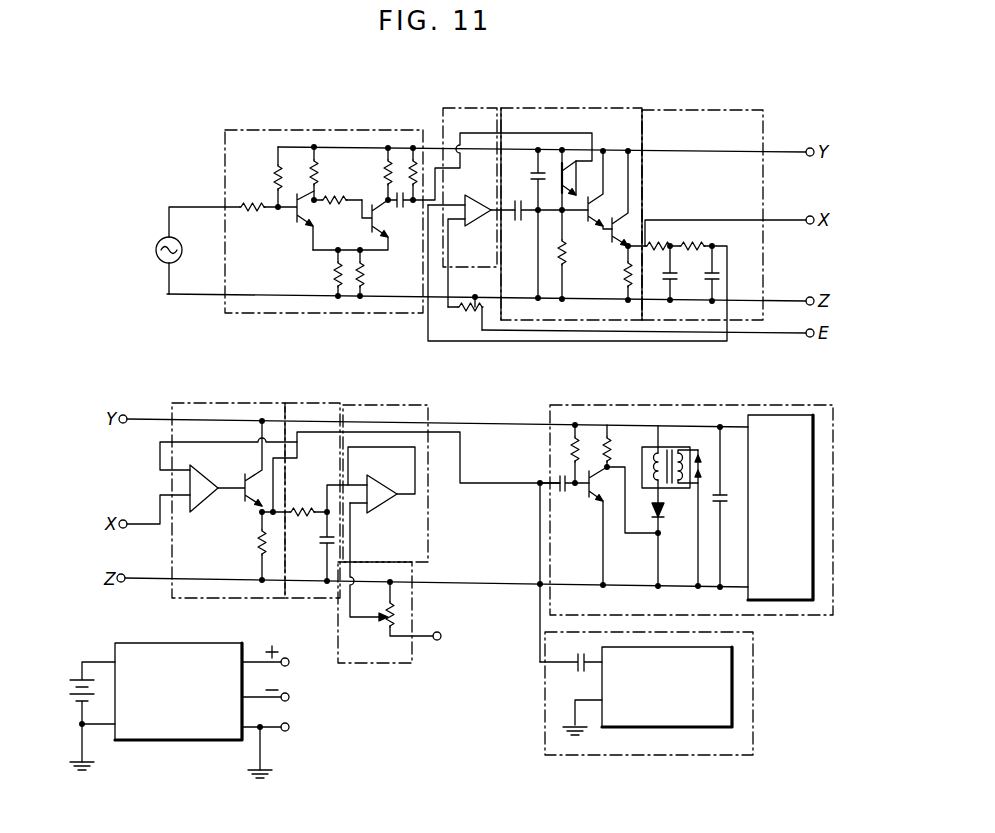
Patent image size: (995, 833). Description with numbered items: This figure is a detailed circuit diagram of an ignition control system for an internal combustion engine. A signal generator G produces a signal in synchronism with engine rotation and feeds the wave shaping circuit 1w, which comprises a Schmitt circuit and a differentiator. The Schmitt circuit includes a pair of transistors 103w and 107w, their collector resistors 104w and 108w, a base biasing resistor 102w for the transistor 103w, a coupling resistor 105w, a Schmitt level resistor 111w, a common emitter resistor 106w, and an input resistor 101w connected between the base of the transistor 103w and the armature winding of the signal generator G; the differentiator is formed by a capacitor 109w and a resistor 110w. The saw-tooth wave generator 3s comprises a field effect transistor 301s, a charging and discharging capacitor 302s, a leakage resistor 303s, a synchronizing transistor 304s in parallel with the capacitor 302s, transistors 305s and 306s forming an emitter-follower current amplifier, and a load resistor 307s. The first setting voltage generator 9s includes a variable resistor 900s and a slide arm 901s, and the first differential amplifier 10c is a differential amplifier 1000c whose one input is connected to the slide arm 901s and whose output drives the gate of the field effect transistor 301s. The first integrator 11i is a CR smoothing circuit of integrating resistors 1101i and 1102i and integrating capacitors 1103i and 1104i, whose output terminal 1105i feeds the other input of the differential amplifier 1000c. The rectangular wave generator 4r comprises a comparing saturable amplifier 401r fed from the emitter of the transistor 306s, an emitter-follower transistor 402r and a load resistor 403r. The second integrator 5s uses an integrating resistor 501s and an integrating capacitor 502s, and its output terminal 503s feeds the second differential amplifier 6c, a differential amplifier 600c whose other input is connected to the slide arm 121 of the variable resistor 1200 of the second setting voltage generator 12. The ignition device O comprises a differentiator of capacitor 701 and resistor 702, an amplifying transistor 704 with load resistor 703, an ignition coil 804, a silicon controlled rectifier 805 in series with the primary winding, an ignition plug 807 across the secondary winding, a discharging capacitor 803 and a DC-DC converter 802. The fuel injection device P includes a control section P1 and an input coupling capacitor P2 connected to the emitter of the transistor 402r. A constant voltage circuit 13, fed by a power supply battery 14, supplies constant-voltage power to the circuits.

The wave shaping circuit 1w is at (221, 133).
The input resistor 101w is at (249, 206).
The base biasing resistor 102w is at (277, 178).
The transistor 103w is at (297, 224).
The collector resistor 104w is at (309, 180).
The coupling resistor 105w is at (339, 199).
The common emitter resistor 106w is at (335, 276).
The transistor 107w is at (385, 233).
The collector resistor 108w is at (388, 183).
The capacitor 109w is at (400, 193).
The resistor 110w is at (413, 160).
The Schmitt level resistor 111w is at (362, 278).
The first differential amplifier 10c is at (457, 108).
The differential amplifier 1000c is at (483, 192).
The field effect transistor 301s is at (518, 226).
The charging and discharging capacitor 302s is at (536, 172).
The leakage resistor 303s is at (567, 250).
The synchronizing transistor 304s is at (562, 167).
The transistor 305s is at (605, 205).
The transistor 306s is at (620, 228).
The load resistor 307s is at (624, 282).
The saw-tooth wave generator 3s is at (628, 110).
The first integrator 11i is at (736, 112).
The integrating resistor 1101i is at (652, 244).
The integrating resistor 1102i is at (700, 243).
The integrating capacitor 1103i is at (672, 280).
The integrating capacitor 1104i is at (716, 277).
The output terminal 1105i is at (714, 245).
The first setting voltage generator 9s is at (427, 318).
The variable resistor 900s is at (483, 308).
The slide arm 901s is at (455, 310).
The rectangular wave generator 4r is at (207, 403).
The comparing saturable amplifier 401r is at (210, 472).
The transistor 402r is at (250, 502).
The load resistor 403r is at (258, 548).
The second integrator 5s is at (323, 403).
The integrating resistor 501s is at (300, 508).
The integrating capacitor 502s is at (335, 543).
The second differential amplifier 6c is at (404, 405).
The output terminal 503s is at (333, 505).
The differential amplifier 600c is at (393, 498).
The second setting voltage generator 12 is at (383, 664).
The variable resistor 1200 is at (395, 608).
The slide arm 121 is at (362, 620).
The capacitor 701 is at (560, 480).
The resistor 702 is at (570, 452).
The load resistor 703 is at (606, 437).
The amplifying transistor 704 is at (589, 496).
The DC-DC converter 802 is at (790, 415).
The discharging capacitor 803 is at (722, 492).
The ignition coil 804 is at (657, 460).
The silicon controlled rectifier 805 is at (661, 510).
The ignition plug 807 is at (698, 450).
The ignition device O is at (835, 420).
The fuel injection device P is at (753, 682).
The control section P1 is at (678, 728).
The input coupling capacitor P2 is at (580, 655).
The constant voltage circuit 13 is at (182, 745).
The power supply battery 14 is at (72, 688).
The signal generator G is at (159, 242).